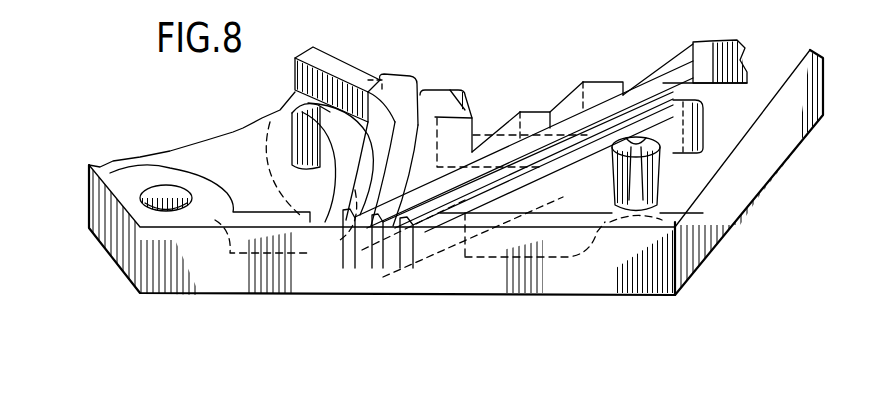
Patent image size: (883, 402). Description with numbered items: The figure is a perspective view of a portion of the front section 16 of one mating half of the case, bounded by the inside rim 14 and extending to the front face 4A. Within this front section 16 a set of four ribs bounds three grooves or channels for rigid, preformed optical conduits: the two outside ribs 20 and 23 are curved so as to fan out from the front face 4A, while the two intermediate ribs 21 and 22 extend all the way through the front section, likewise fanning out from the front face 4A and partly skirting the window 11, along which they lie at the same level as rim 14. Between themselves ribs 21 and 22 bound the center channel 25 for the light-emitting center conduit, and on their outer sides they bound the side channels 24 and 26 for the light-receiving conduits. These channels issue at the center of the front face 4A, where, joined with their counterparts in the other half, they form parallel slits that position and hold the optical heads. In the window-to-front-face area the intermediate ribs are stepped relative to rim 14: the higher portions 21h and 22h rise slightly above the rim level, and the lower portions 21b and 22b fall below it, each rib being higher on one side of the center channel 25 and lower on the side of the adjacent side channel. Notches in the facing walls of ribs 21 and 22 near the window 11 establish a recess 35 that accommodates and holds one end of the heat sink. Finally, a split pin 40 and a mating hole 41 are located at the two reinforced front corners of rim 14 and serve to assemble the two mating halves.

The inside rim 14 is at (748, 125).
The mating hole 41 is at (168, 195).
The intermediate rib 22 is at (328, 70).
The higher portion of rib 22 22h is at (400, 93).
The lower portion of rib 22 22b is at (440, 97).
The recess 35 is at (468, 108).
The higher portion of rib 21 21h is at (533, 117).
The lower portion of rib 21 21b is at (608, 104).
The intermediate rib 21 is at (700, 63).
The outside rib 20 is at (728, 112).
The front section 16 is at (760, 108).
The split pin 40 is at (660, 172).
The outside rib 23 is at (294, 112).
The window 11 is at (387, 58).
The side channel 26 is at (343, 237).
The center channel 25 is at (370, 245).
The side channel 24 is at (400, 255).
The front face 4A is at (502, 260).